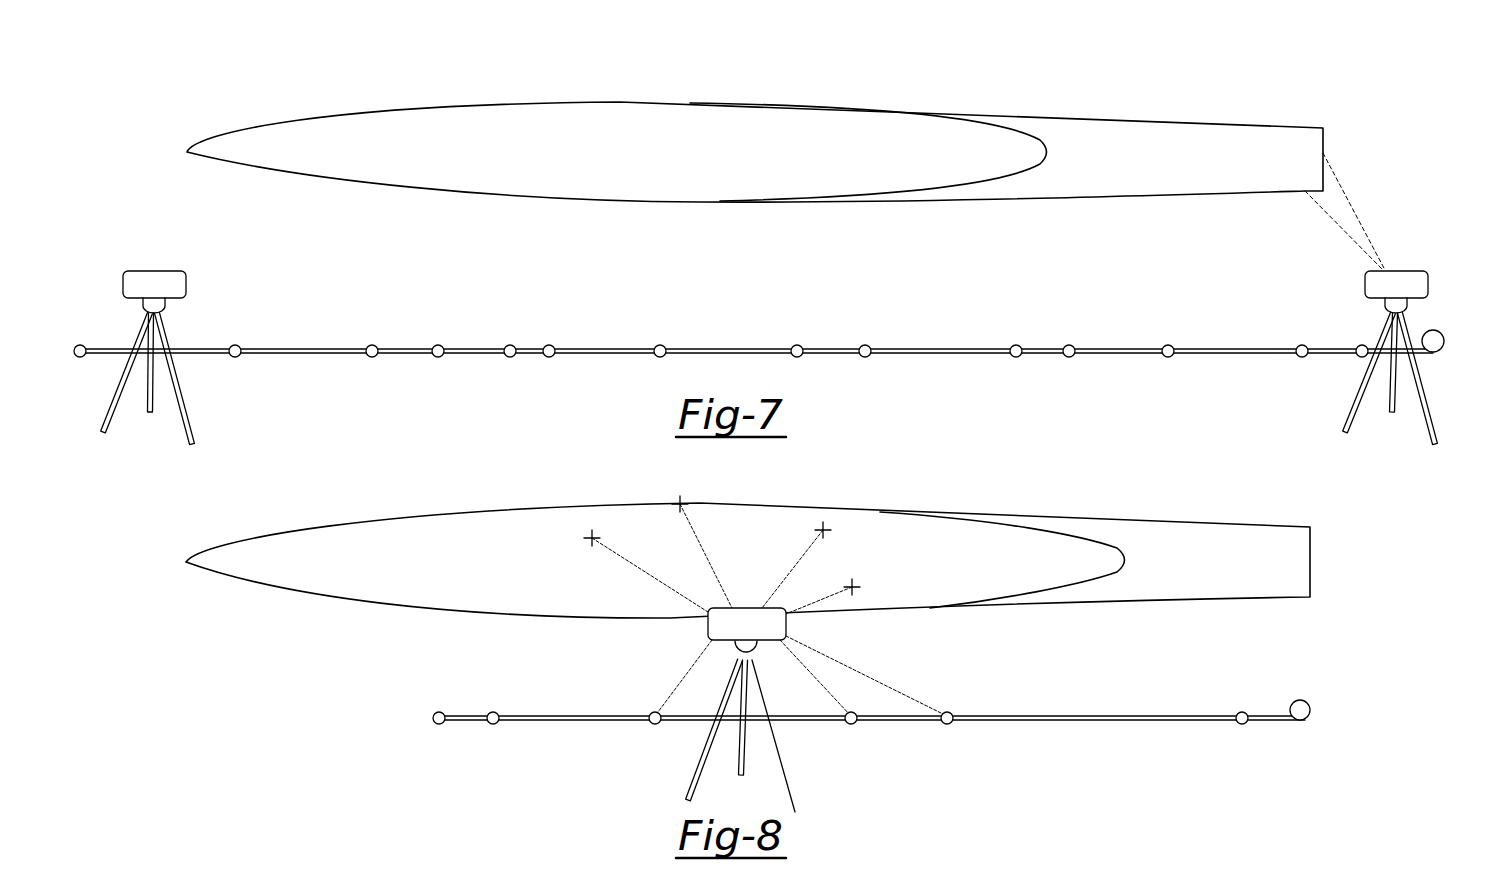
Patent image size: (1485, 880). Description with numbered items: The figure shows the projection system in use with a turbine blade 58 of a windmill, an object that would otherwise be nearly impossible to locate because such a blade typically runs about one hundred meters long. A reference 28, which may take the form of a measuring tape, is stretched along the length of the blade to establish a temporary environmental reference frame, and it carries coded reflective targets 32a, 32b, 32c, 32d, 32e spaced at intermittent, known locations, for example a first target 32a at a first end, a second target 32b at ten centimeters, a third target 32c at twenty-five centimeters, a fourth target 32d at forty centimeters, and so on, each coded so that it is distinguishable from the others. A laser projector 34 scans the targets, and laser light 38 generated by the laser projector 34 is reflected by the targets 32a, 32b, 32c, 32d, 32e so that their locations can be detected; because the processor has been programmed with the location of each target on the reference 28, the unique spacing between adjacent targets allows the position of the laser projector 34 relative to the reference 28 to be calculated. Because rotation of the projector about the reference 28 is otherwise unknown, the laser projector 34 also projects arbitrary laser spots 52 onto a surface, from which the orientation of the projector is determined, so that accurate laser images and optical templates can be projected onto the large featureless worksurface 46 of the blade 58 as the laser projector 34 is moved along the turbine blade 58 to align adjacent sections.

In FIG. 7, the reference 28 is at (737, 349).
In FIG. 8, the reference 28 is at (1062, 716).
In FIG. 7, the first target 32a is at (235, 358).
In FIG. 8, the first target 32a is at (493, 725).
In FIG. 7, the second target 32b is at (371, 358).
In FIG. 8, the second target 32b is at (655, 725).
In FIG. 7, the third target 32c is at (438, 358).
In FIG. 8, the third target 32c is at (851, 725).
In FIG. 7, the fourth target 32d is at (509, 358).
In FIG. 8, the fourth target 32d is at (946, 725).
In FIG. 7, the target 32e is at (549, 358).
In FIG. 8, the target 32e is at (1242, 725).
In FIG. 7, the laser projector 34 is at (186, 290).
In FIG. 8, the laser projector 34 is at (760, 636).
In FIG. 7, the laser light 38 is at (1365, 233).
In FIG. 7, the worksurface 46 is at (942, 163).
In FIG. 8, the worksurface 46 is at (1062, 573).
In FIG. 8, the arbitrary laser spots 52 is at (592, 542).
In FIG. 7, the turbine blade 58 is at (1063, 116).
In FIG. 8, the turbine blade 58 is at (988, 498).